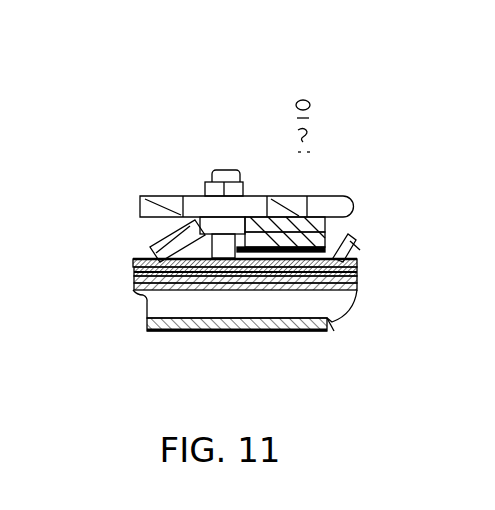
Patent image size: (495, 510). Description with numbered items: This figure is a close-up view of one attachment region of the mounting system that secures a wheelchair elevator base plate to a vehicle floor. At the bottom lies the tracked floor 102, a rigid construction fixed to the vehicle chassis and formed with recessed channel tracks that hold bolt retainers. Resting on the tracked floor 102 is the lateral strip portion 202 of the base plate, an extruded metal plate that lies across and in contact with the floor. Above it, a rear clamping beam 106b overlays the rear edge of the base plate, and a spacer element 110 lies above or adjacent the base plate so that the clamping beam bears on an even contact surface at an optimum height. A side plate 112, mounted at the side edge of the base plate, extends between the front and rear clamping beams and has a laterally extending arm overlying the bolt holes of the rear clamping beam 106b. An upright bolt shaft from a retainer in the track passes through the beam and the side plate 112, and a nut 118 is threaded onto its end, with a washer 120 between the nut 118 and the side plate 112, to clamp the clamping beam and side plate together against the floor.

The tracked floor 102 is at (295, 302).
The rear clamping beam 106b is at (295, 222).
The spacer element 110 is at (292, 235).
The side plate 112 is at (153, 207).
The nut 118 is at (215, 185).
The washer 120 is at (256, 195).
The lateral strip portion 202 is at (262, 252).